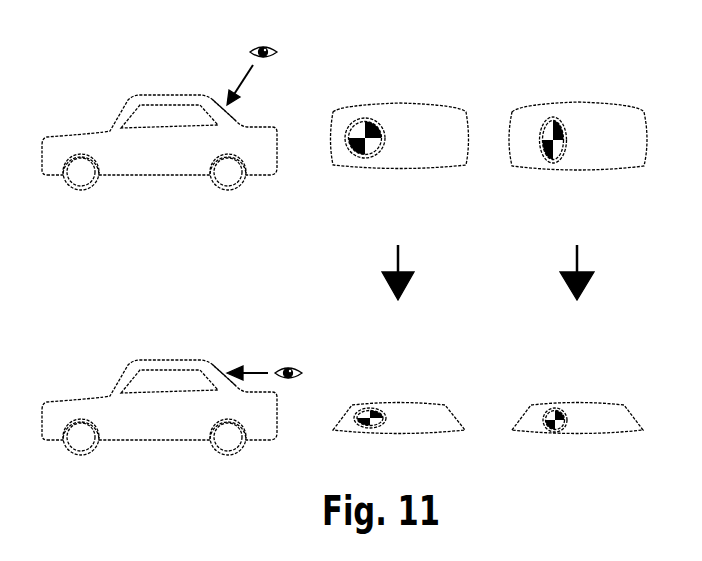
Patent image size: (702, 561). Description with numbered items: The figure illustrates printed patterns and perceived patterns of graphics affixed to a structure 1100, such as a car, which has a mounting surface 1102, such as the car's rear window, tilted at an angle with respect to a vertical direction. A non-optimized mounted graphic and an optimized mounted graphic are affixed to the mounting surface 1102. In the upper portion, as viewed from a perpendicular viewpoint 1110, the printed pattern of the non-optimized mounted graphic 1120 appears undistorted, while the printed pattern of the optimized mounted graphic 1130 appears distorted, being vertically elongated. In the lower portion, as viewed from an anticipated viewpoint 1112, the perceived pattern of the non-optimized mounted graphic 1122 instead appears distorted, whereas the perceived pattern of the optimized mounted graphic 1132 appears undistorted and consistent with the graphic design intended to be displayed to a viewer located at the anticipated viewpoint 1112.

The structure 1100 is at (130, 107).
The mounting surface 1102 is at (212, 102).
The perpendicular viewpoint 1110 is at (277, 50).
The anticipated viewpoint 1112 is at (302, 373).
The printed pattern of the non-optimized mounted graphic 1120 is at (388, 103).
The printed pattern of the optimized mounted graphic 1130 is at (582, 103).
The perceived pattern of the non-optimized mounted graphic 1122 is at (405, 403).
The perceived pattern of the optimized mounted graphic 1132 is at (573, 403).